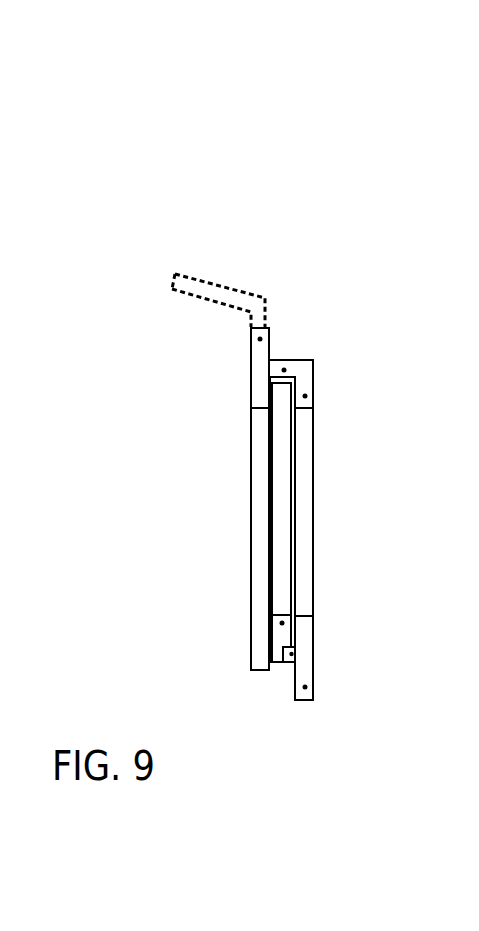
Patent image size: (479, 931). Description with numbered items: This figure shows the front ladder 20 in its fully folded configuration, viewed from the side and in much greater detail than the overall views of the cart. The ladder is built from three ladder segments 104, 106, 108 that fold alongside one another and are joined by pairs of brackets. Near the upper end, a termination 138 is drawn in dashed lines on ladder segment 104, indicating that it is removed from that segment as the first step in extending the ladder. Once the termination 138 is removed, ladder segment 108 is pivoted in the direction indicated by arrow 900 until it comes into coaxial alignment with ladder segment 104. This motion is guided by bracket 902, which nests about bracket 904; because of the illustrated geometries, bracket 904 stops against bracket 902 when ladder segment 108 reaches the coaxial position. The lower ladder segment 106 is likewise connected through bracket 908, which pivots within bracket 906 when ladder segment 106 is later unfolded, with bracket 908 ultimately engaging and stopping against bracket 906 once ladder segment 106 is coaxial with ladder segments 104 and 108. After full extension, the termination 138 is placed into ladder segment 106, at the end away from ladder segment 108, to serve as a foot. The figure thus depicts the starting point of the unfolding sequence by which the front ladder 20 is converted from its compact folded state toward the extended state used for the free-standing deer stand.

The arrow 900 is at (343, 517).
The front ladder 20 is at (206, 495).
The termination 138 is at (215, 288).
The bracket 902 is at (258, 367).
The ladder segment 104 is at (258, 448).
The ladder segment 106 is at (260, 577).
The bracket 908 is at (280, 637).
The bracket 904 is at (303, 372).
The ladder segment 108 is at (307, 600).
The bracket 906 is at (307, 672).